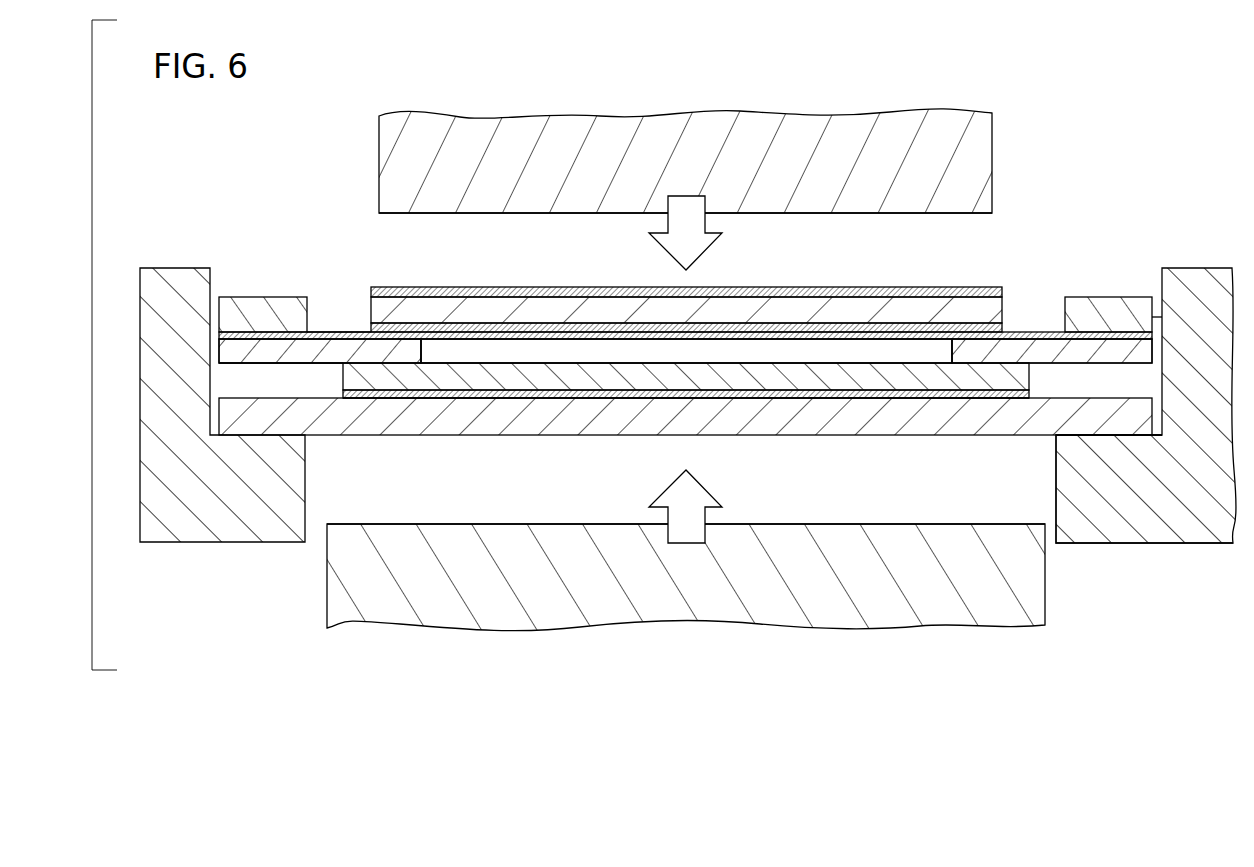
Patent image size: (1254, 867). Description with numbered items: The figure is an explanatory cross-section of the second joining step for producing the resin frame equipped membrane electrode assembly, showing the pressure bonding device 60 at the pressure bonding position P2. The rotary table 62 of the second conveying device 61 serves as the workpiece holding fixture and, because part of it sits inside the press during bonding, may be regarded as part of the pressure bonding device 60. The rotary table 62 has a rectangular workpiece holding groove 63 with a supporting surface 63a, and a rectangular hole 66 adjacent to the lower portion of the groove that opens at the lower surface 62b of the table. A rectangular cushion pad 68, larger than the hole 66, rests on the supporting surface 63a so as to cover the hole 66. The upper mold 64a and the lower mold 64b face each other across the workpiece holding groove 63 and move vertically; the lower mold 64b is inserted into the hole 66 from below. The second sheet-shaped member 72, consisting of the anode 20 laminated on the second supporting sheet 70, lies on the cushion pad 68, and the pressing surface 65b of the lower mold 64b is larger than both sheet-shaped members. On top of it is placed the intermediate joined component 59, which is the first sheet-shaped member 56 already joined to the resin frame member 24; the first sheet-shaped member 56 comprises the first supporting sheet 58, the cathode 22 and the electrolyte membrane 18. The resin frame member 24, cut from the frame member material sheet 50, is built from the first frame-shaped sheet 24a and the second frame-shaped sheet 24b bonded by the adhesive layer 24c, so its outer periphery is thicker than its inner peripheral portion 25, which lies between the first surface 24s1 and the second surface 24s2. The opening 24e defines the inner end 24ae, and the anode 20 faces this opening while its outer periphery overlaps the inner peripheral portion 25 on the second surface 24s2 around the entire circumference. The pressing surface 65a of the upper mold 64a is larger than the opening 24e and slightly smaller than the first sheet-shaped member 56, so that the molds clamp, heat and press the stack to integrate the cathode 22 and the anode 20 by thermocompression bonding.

The pressure bonding device 60 is at (1151, 342).
The second conveying device 61 is at (1151, 378).
The rotary table 62 is at (1186, 266).
The lower surface of the rotary table 62b is at (1115, 543).
The workpiece holding groove 63 is at (1152, 317).
The supporting surface 63a is at (1087, 433).
The hole 66 is at (308, 510).
The upper mold 64a is at (958, 117).
The lower mold 64b is at (962, 600).
The pressing surface of the upper mold 65a is at (834, 215).
The pressing surface of the lower mold 65b is at (775, 523).
The cushion pad 68 is at (442, 420).
The resin frame member 24 is at (1109, 273).
The frame member material sheet 50 is at (1101, 294).
The first frame-shaped sheet 24a is at (247, 350).
The second frame-shaped sheet 24b is at (282, 315).
The adhesive layer 24c is at (333, 332).
The opening 24e is at (492, 348).
The inner end of the resin frame member 24ae is at (950, 350).
The first surface 24s1 is at (352, 332).
The second surface 24s2 is at (322, 365).
The inner peripheral portion of the resin frame member 25 is at (407, 350).
The intermediate joined component 59 is at (714, 281).
The first sheet-shaped member 56 is at (686, 281).
The first supporting sheet 58 is at (535, 288).
The cathode 22 is at (605, 307).
The electrolyte membrane 18 is at (777, 328).
The anode 20 is at (637, 378).
The second supporting sheet 70 is at (580, 397).
The second sheet-shaped member 72 is at (525, 402).
The pressure bonding position P2 is at (320, 240).